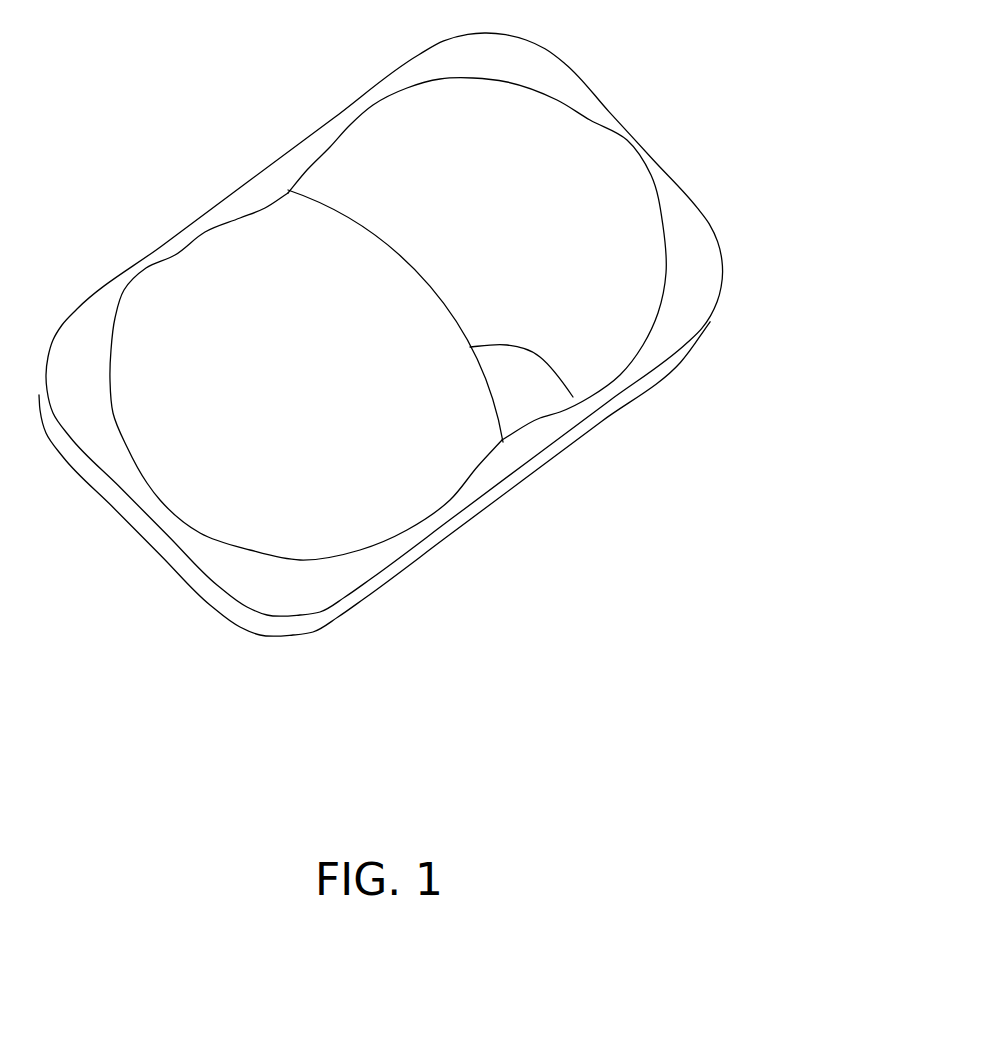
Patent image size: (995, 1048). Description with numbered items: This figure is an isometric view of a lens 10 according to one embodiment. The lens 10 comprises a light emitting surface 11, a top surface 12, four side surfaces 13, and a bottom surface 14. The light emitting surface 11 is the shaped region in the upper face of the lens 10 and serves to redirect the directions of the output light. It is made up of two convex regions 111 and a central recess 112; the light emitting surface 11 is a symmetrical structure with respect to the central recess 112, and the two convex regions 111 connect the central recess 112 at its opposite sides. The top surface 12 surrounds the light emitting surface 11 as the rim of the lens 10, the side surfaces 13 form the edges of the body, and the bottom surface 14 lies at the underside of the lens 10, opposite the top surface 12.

The lens 10 is at (242, 79).
The light emitting surface 11 is at (185, 333).
The convex regions 111 is at (513, 195).
The central recess 112 is at (573, 397).
The top surface 12 is at (673, 217).
The side surfaces 13 is at (137, 517).
The bottom surface 14 is at (632, 401).